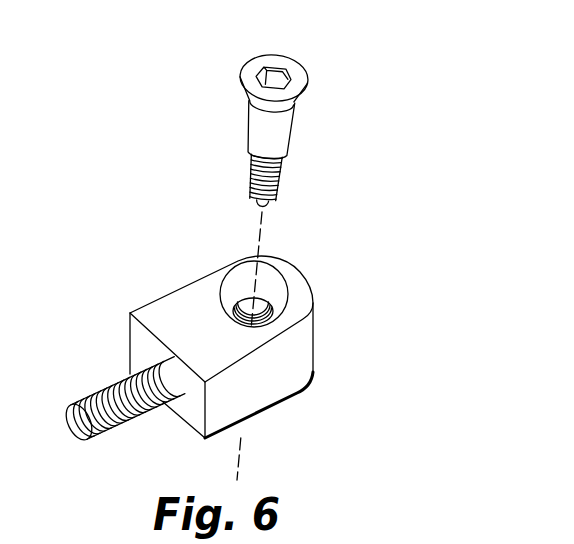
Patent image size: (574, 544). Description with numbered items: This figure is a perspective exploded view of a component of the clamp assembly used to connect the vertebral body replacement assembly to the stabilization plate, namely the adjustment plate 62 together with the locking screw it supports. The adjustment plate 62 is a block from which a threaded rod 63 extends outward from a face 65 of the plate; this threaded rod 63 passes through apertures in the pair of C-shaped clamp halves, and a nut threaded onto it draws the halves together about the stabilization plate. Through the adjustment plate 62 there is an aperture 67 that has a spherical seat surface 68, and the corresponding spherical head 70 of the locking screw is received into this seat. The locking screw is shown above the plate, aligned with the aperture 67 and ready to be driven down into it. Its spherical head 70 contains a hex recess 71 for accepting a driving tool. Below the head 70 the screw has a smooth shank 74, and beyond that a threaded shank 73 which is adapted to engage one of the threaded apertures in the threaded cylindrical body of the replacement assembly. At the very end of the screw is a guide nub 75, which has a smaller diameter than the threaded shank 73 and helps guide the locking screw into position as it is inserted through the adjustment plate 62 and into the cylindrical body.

The adjustment plate 62 is at (171, 291).
The threaded rod 63 is at (133, 431).
The face 65 is at (140, 346).
The aperture 67 is at (266, 295).
The spherical seat surface 68 is at (238, 292).
The spherical head 70 is at (294, 101).
The hex recess 71 is at (271, 70).
The threaded shank 73 is at (282, 182).
The smooth shank 74 is at (288, 124).
The guide nub 75 is at (257, 207).